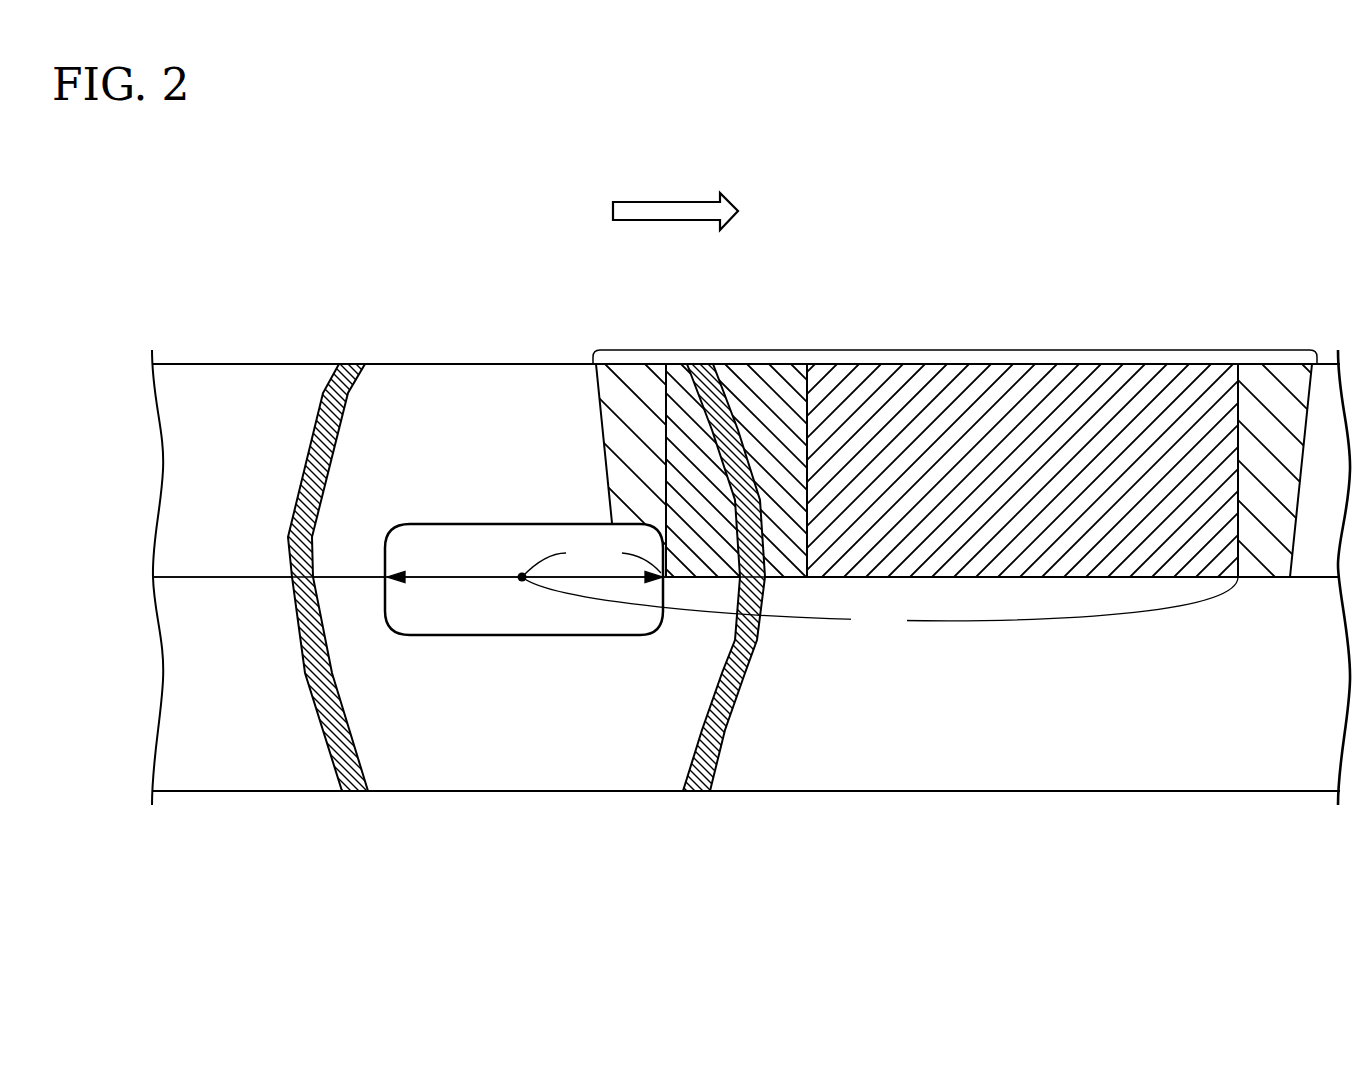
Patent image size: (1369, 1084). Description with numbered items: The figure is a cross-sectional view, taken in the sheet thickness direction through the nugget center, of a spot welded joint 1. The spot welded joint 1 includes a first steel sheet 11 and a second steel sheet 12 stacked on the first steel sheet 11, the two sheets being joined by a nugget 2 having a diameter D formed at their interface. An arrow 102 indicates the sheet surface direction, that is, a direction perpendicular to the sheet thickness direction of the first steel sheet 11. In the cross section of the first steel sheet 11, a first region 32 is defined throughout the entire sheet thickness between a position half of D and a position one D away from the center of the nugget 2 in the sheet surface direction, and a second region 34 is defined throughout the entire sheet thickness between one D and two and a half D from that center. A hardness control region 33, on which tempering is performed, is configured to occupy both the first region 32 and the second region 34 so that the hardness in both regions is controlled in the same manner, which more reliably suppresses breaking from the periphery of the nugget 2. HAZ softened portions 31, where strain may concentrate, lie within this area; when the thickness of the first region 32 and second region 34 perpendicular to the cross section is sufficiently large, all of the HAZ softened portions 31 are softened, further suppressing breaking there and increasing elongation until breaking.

The spot welded joint 1 is at (232, 318).
The first steel sheet 11 is at (278, 364).
The second steel sheet 12 is at (270, 793).
The nugget 2 is at (502, 636).
The arrow 102 is at (657, 207).
The HAZ softened portion 31 is at (703, 385).
The first region 32 is at (757, 400).
The hardness control region 33 is at (952, 350).
The second region 34 is at (1078, 400).